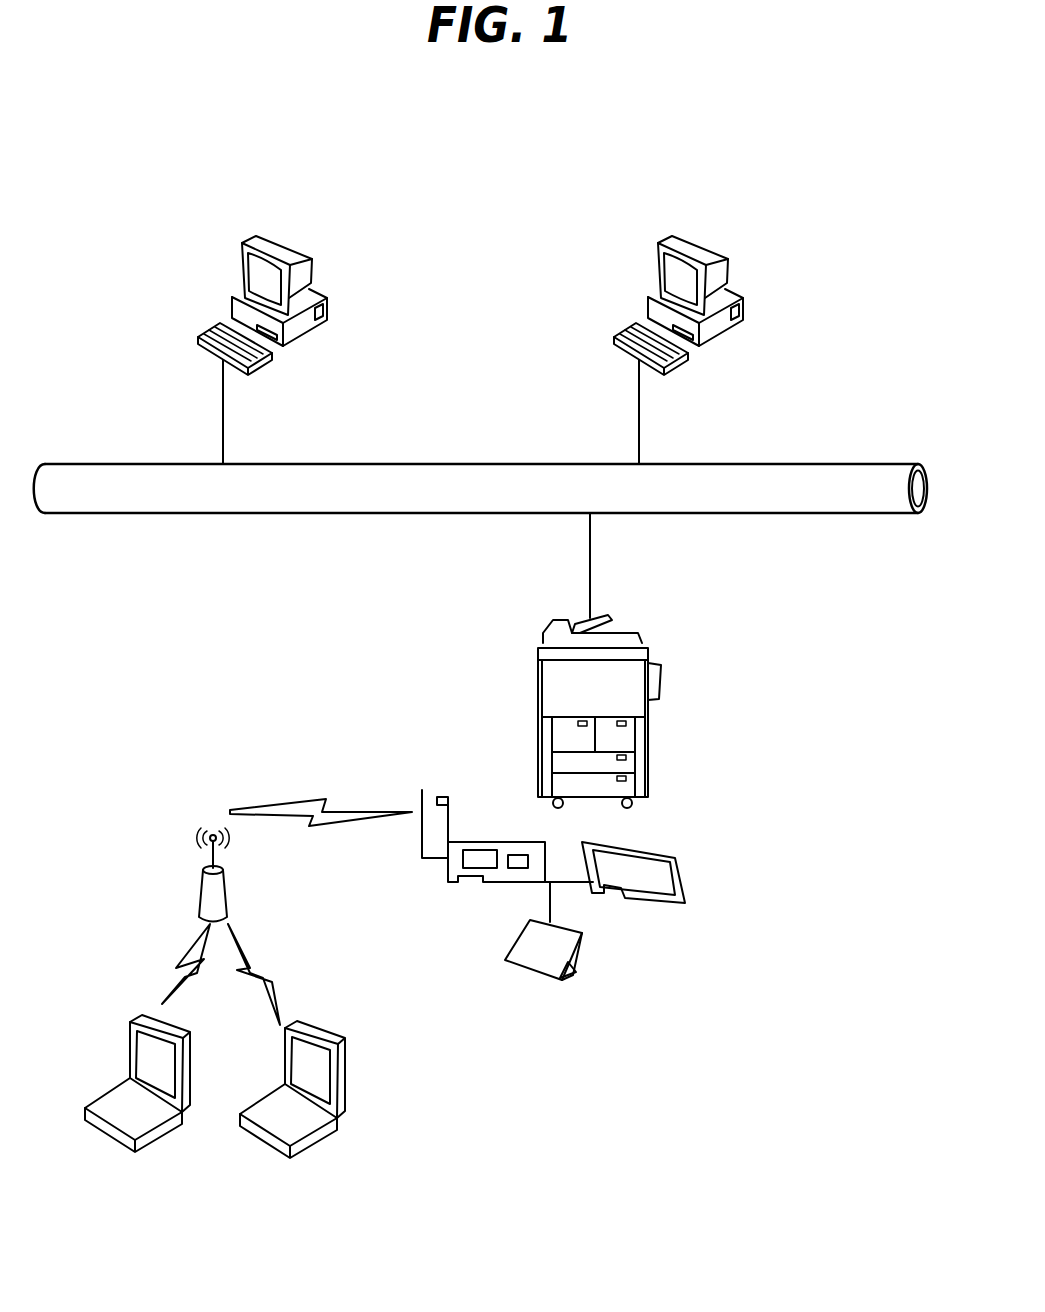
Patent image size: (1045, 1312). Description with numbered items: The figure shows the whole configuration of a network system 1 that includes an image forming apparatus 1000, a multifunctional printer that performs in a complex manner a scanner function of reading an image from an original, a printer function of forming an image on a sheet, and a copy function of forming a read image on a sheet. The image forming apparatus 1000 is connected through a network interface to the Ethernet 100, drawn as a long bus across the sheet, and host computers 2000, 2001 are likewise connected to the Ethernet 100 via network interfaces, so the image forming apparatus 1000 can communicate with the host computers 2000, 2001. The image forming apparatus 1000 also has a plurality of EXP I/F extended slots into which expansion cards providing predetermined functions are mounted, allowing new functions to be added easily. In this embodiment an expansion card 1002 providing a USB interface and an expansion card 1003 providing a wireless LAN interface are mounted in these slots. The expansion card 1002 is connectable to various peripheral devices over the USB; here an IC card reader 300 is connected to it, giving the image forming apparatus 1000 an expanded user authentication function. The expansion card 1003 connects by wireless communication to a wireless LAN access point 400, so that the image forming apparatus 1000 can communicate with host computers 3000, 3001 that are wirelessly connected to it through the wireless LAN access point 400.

The network system 1 is at (876, 190).
The Ethernet 100 is at (765, 463).
The host computer 2000 is at (297, 250).
The host computer 2001 is at (712, 250).
The image forming apparatus 1000 is at (648, 742).
The expansion card 1003 is at (447, 870).
The expansion card 1002 is at (683, 870).
The IC card reader 300 is at (580, 931).
The wireless LAN access point 400 is at (228, 893).
The host computer 3001 is at (150, 1146).
The host computer 3000 is at (322, 1150).